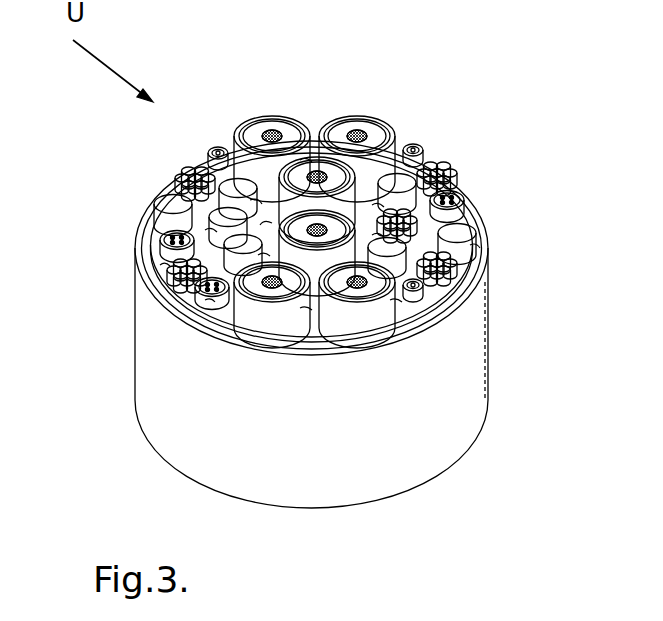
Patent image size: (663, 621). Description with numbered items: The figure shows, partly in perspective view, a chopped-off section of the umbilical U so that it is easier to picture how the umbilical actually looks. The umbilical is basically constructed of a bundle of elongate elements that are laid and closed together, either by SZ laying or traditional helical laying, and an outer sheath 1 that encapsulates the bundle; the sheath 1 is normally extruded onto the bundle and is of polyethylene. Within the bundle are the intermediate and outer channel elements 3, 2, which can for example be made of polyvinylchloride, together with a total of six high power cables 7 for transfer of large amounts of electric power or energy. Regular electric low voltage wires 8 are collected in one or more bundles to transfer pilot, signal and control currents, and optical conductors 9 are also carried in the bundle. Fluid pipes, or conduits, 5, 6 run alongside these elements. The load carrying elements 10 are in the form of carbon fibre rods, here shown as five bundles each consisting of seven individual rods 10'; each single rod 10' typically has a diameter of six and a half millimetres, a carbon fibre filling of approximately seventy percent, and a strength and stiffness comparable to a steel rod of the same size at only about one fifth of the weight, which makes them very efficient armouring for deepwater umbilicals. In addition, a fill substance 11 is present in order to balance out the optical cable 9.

The outer sheath 1 is at (478, 270).
The outer channel element 2 is at (420, 305).
The intermediate channel element 3 is at (414, 268).
The fluid pipe 5 is at (213, 217).
The fluid pipe 6 is at (163, 214).
The high power cable 7 is at (372, 129).
The electric low voltage wire 8 is at (161, 250).
The optical conductor 9 is at (423, 150).
The load carrying element 10 is at (371, 230).
The individual rod 10' is at (480, 178).
The fill substance 11 is at (205, 295).